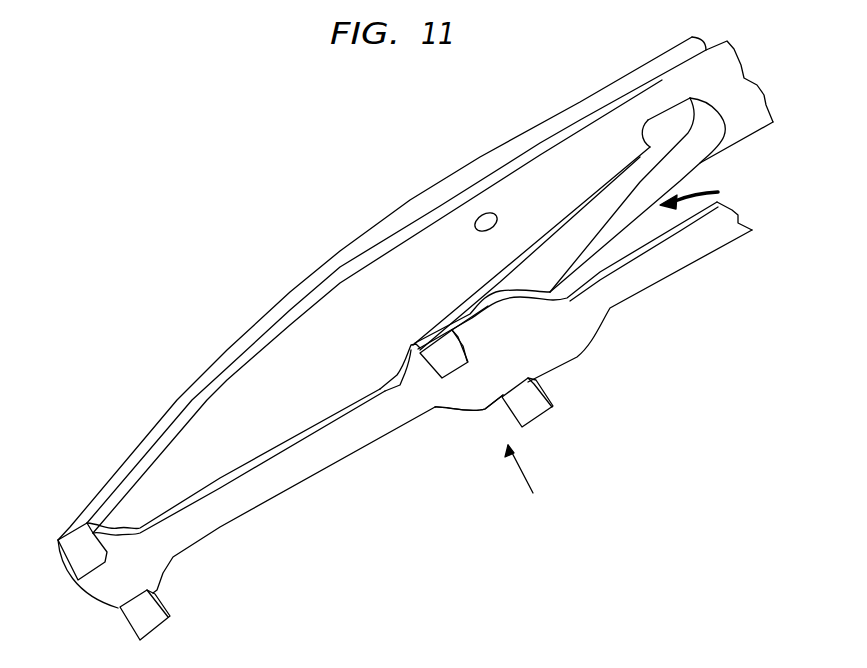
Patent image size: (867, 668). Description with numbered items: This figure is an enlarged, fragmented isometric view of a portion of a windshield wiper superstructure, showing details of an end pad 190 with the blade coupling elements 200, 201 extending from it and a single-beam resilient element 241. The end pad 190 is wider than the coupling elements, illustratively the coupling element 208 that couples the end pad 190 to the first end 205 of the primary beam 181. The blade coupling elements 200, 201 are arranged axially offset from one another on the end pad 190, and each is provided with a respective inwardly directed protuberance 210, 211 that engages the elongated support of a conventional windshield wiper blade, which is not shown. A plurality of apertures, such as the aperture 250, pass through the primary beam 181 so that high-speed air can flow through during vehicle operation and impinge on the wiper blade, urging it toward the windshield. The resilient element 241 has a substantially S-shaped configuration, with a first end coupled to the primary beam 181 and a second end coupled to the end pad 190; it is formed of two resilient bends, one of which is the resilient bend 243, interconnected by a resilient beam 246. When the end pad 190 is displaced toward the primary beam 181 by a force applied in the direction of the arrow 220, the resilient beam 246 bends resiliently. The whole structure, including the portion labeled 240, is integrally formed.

The primary beam 181 is at (227, 350).
The end pad 190 is at (440, 404).
The blade coupling element 200 is at (412, 352).
The blade coupling element 201 is at (540, 412).
The first end of primary beam 205 is at (66, 535).
The coupling element 208 is at (247, 508).
The inwardly directed protuberance 210 is at (468, 348).
The inwardly directed protuberance 211 is at (504, 397).
The arrow 220 is at (521, 468).
The body 240 is at (410, 541).
The resilient element 241 is at (705, 194).
The resilient bend 243 is at (714, 130).
The resilient beam 246 is at (688, 160).
The aperture 250 is at (483, 220).